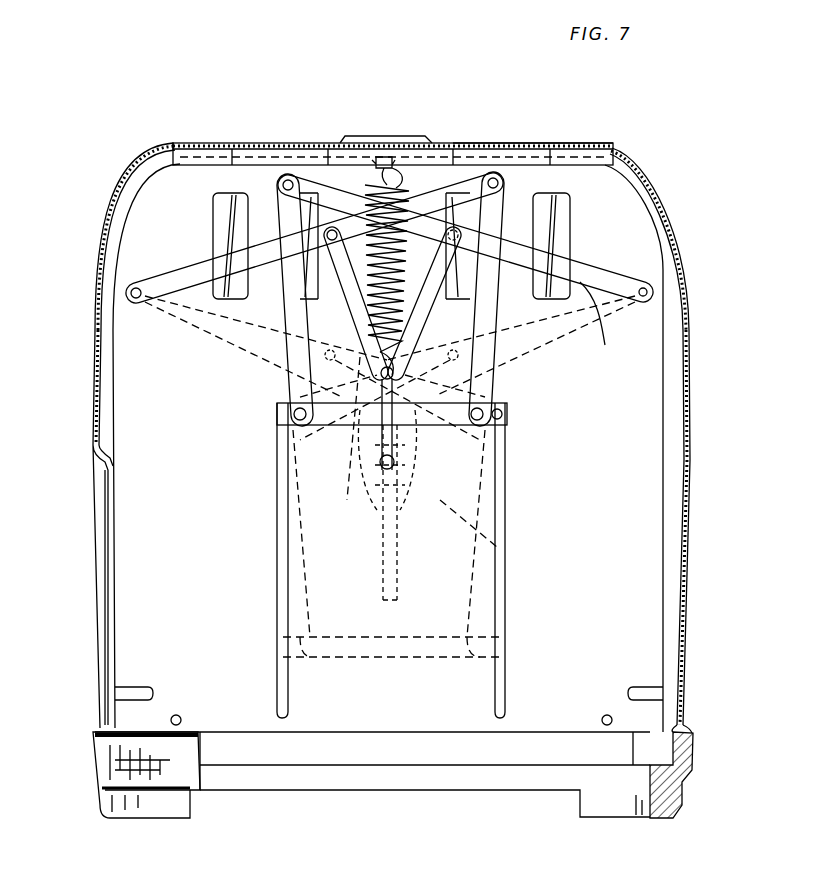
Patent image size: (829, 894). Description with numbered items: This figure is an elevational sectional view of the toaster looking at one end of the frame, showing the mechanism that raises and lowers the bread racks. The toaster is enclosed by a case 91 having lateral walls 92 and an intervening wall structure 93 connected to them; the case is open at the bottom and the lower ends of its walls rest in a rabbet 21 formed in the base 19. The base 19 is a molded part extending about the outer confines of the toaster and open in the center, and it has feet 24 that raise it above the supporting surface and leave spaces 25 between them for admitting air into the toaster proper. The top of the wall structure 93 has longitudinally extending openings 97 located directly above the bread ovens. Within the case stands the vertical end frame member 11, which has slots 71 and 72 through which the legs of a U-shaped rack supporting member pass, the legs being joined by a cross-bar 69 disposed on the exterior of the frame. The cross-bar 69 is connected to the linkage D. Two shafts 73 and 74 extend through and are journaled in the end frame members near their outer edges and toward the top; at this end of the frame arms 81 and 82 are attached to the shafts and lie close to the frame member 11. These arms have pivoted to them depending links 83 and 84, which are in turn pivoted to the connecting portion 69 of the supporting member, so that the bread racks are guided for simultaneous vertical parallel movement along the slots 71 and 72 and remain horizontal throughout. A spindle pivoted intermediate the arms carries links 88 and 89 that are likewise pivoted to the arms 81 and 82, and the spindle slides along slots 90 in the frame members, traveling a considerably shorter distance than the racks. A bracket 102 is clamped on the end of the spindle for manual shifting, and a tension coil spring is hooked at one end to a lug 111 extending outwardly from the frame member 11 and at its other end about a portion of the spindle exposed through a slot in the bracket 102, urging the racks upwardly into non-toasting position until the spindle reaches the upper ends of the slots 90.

The vertical end frame member 11 is at (655, 432).
The base 19 is at (680, 790).
The rabbet 21 is at (680, 722).
The feet 24 is at (132, 820).
The spaces 25 is at (272, 810).
The cross-bar 69 is at (316, 432).
The slot 71 is at (505, 562).
The slot 72 is at (276, 598).
The shaft 73 is at (130, 293).
The shaft 74 is at (649, 292).
The arm 81 is at (588, 272).
The arm 82 is at (200, 268).
The depending link 83 is at (485, 322).
The depending link 84 is at (292, 310).
The link 88 is at (428, 298).
The link 89 is at (352, 297).
The slot 90 is at (400, 478).
The case 91 is at (110, 218).
The lateral wall 92 is at (95, 447).
The wall structure 93 is at (262, 143).
The opening 97 is at (528, 143).
The bracket 102 is at (366, 478).
The lug 111 is at (390, 158).
The linkage D is at (390, 361).